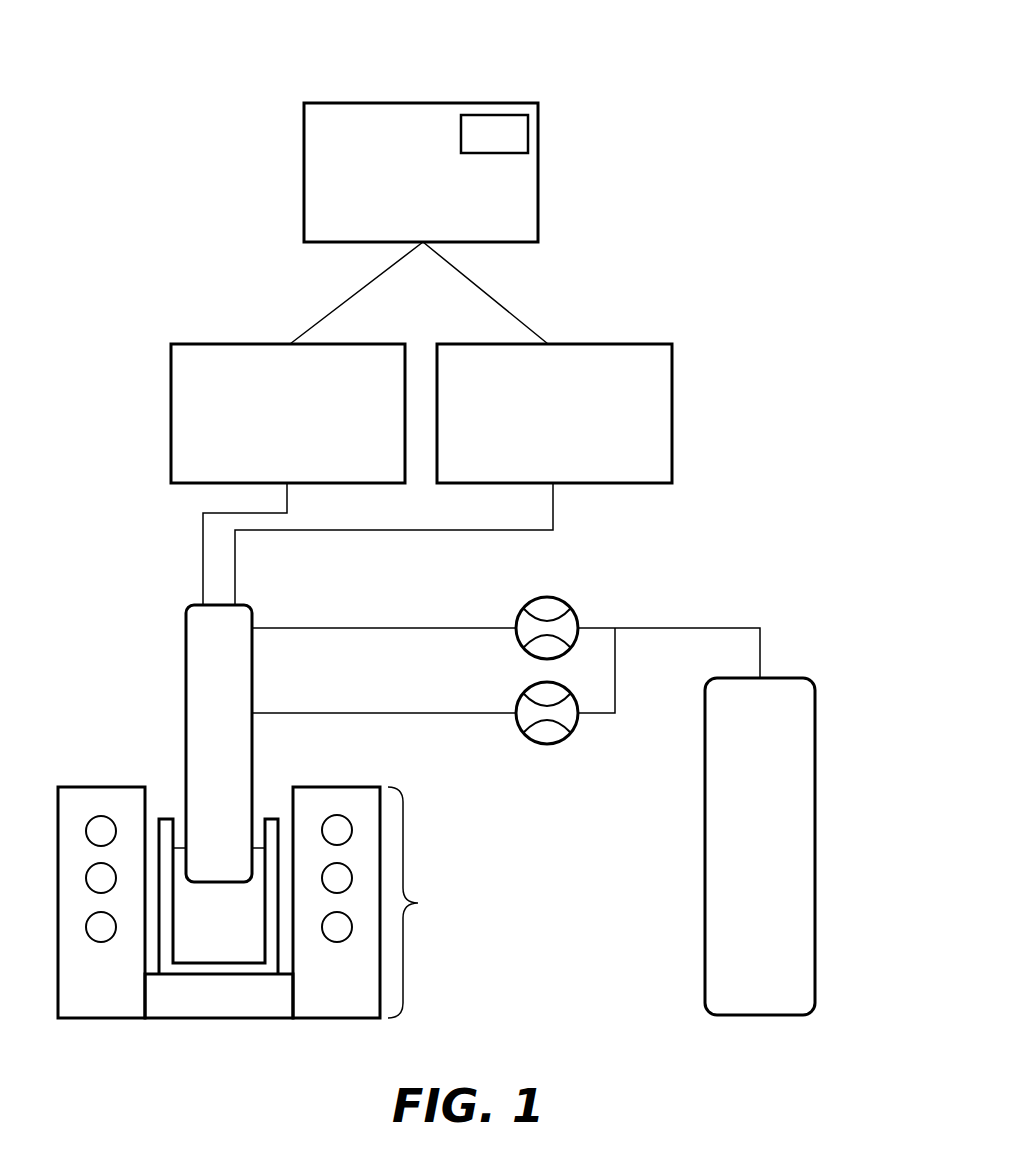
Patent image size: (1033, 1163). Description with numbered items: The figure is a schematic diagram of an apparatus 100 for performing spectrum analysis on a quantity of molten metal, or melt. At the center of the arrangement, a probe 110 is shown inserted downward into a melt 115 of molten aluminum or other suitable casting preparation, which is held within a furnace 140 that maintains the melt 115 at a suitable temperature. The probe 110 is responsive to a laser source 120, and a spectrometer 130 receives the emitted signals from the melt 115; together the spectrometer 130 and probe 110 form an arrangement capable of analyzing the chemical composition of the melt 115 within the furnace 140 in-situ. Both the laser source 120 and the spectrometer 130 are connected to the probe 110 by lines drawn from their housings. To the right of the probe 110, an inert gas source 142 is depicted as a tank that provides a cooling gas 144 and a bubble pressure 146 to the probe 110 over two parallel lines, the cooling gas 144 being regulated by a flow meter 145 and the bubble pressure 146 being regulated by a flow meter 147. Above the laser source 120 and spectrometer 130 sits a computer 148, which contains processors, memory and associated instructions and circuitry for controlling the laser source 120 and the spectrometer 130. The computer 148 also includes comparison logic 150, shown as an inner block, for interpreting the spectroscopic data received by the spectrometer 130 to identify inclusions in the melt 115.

The apparatus 100 is at (602, 75).
The computer 148 is at (371, 198).
The comparison logic 150 is at (474, 147).
The laser source 120 is at (267, 442).
The spectrometer 130 is at (533, 442).
The probe 110 is at (197, 767).
The melt 115 is at (198, 947).
The furnace 140 is at (79, 997).
The inert gas source 142 is at (738, 874).
The cooling gas 144 is at (295, 627).
The flow meter 145 is at (553, 598).
The bubble pressure 146 is at (297, 714).
The flow meter 147 is at (543, 745).